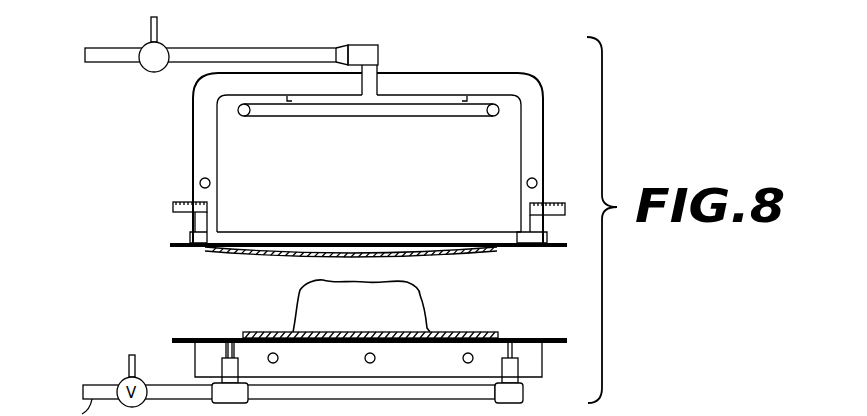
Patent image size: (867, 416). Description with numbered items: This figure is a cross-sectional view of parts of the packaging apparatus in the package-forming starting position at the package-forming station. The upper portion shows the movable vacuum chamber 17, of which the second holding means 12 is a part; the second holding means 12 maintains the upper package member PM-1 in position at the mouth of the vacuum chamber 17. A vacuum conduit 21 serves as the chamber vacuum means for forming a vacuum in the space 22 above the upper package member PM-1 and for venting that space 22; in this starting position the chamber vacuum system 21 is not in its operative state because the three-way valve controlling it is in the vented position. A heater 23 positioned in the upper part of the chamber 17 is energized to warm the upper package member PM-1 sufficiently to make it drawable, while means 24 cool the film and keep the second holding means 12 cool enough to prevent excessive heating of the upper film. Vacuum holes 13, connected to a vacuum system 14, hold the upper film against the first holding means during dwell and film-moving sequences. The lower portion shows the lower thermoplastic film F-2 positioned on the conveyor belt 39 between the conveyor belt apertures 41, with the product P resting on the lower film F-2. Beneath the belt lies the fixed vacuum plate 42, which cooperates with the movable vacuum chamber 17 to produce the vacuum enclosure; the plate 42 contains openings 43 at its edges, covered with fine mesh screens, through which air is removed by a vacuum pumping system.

The vacuum conduit 21 is at (100, 46).
The movable vacuum chamber 17 is at (436, 74).
The space 22 is at (393, 165).
The heater 23 is at (298, 118).
The cooling means 24 is at (210, 183).
The vacuum system 14 is at (176, 207).
The vacuum holes 13 is at (196, 218).
The second holding means 12 is at (190, 250).
The upper package member PM-1 is at (220, 250).
The conveyor belt 39 is at (178, 337).
The apertures 41 is at (230, 340).
The openings 43 is at (226, 350).
The fixed vacuum plate 42 is at (428, 368).
The product P is at (368, 312).
The lower thermoplastic film F-2 is at (470, 332).